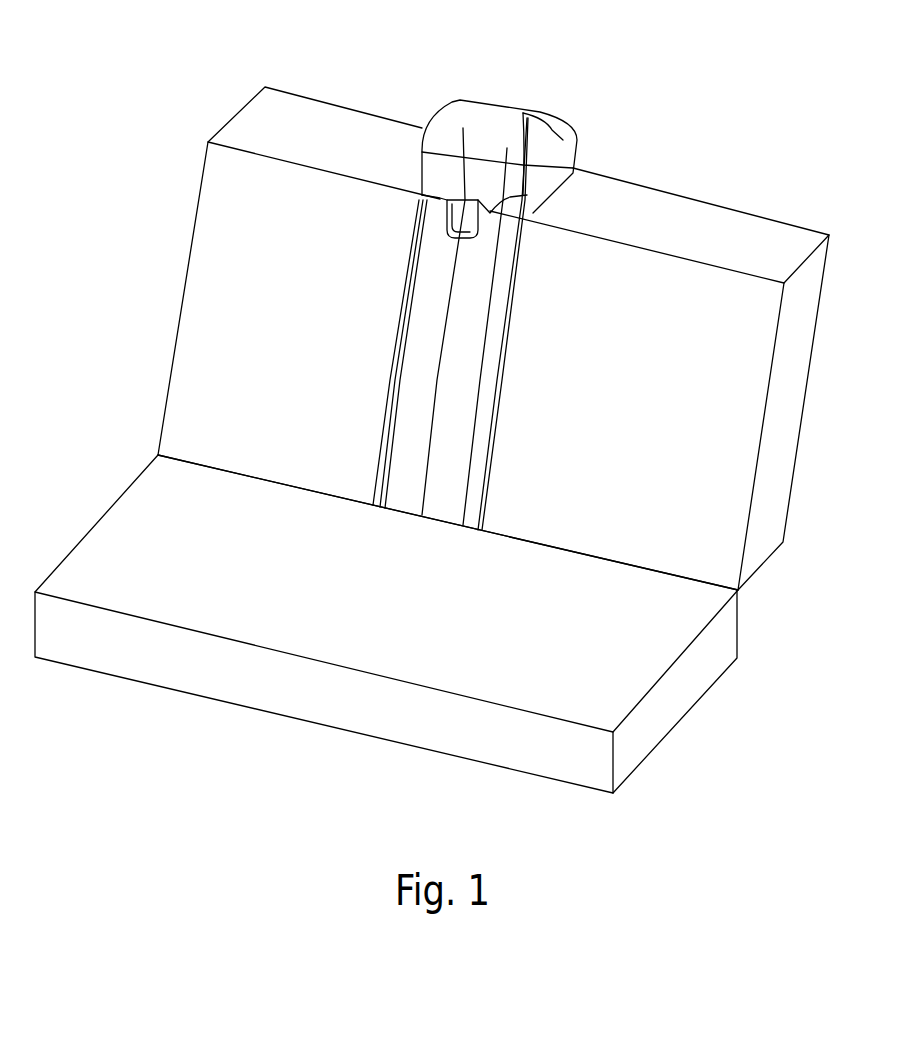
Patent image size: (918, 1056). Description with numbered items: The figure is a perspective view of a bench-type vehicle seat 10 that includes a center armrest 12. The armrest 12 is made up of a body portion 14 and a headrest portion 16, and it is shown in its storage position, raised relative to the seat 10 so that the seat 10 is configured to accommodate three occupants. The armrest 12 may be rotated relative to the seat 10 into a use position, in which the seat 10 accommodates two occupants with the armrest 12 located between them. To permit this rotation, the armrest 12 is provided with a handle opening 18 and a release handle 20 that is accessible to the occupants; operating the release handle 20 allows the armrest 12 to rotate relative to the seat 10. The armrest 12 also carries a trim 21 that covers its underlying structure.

The bench-type vehicle seat 10 is at (738, 245).
The center armrest 12 is at (584, 112).
The body portion 14 is at (405, 388).
The headrest portion 16 is at (462, 118).
The handle opening 18 is at (473, 217).
The release handle 20 is at (475, 228).
The trim 21 is at (392, 467).